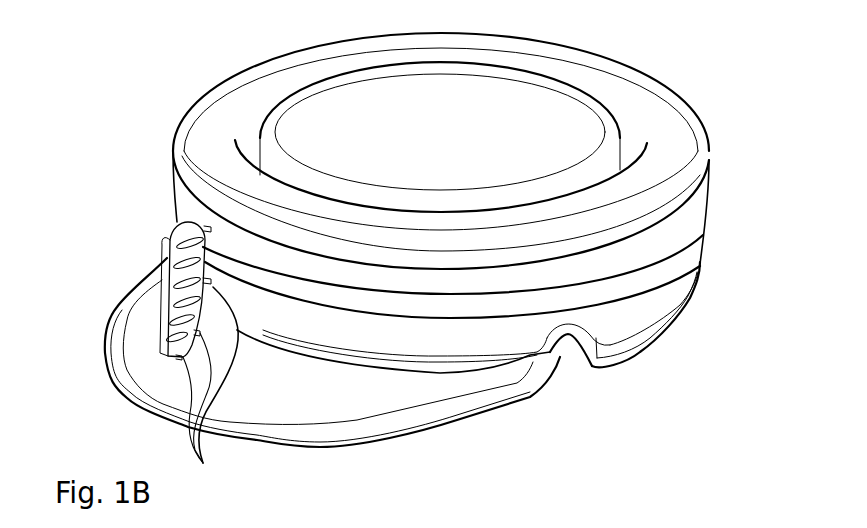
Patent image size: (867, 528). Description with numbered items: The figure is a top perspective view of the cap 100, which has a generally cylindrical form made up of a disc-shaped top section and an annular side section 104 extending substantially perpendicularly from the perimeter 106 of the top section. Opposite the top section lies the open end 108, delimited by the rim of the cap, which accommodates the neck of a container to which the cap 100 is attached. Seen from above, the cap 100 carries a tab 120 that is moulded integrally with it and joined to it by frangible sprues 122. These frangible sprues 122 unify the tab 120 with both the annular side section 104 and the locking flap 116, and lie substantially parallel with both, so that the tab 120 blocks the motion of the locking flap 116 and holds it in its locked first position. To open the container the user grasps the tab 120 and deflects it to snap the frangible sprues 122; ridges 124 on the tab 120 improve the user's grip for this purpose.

The cap 100 is at (628, 420).
The annular side section 104 is at (687, 213).
The perimeter 106 is at (672, 120).
The open end 108 is at (570, 403).
The locking flap 116 is at (370, 398).
The tab 120 is at (167, 257).
The frangible sprues 122 is at (204, 465).
The ridges 124 is at (167, 308).